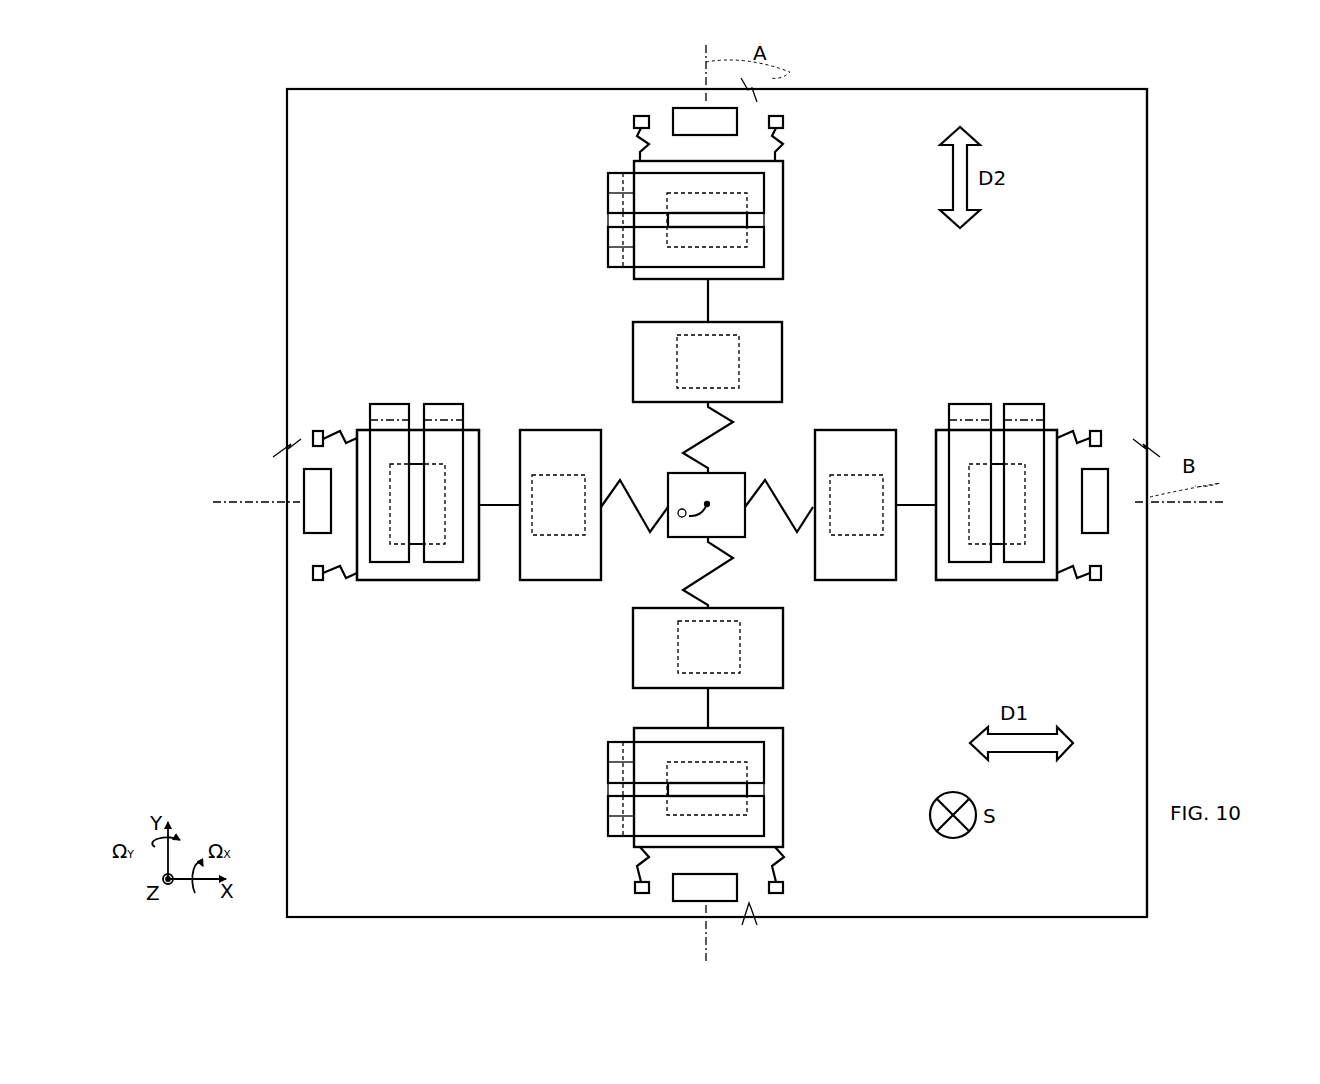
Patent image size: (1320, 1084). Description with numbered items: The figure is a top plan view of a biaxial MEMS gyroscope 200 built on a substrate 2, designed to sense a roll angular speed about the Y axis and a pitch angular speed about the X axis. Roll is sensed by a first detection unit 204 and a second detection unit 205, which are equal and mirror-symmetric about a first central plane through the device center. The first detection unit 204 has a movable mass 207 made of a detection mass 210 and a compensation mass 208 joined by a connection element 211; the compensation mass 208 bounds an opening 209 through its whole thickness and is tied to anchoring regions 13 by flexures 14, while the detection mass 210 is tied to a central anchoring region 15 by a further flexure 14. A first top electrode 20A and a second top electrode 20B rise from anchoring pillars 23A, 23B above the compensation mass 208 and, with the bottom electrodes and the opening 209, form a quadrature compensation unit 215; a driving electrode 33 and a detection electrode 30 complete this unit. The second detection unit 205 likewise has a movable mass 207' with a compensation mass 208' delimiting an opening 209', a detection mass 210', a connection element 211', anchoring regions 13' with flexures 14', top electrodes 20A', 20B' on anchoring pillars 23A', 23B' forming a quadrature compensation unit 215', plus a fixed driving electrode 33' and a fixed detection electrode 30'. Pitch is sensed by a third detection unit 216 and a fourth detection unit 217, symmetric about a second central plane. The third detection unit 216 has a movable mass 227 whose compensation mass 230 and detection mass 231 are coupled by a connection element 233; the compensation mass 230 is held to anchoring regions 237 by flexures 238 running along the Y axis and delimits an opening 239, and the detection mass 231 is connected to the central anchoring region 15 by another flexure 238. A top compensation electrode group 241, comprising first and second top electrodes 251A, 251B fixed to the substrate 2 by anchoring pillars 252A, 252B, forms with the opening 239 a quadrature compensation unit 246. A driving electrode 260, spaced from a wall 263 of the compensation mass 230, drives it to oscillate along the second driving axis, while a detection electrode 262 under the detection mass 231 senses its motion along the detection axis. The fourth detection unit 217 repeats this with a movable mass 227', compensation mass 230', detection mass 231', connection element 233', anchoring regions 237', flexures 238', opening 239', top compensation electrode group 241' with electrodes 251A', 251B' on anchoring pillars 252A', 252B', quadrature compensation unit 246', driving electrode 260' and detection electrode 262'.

The substrate 2 is at (1122, 128).
The MEMS gyroscope 200 is at (252, 112).
The anchoring regions 13 is at (960, 501).
The fixed portion 13' is at (279, 427).
The flexures 14 is at (934, 482).
The spring 14' is at (490, 485).
The central anchoring region 15 is at (727, 478).
The first top electrode 20A is at (949, 474).
The second top electrode 20B is at (1045, 479).
The first top electrode 20A' is at (463, 517).
The second top electrode 20B' is at (376, 517).
The anchoring pillar 23A is at (963, 393).
The anchoring pillar 23B is at (1040, 393).
The anchoring pillar 23A' is at (458, 394).
The anchoring pillar 23B' is at (373, 391).
The detection electrode 30 is at (856, 485).
The fixed detection electrode 30' is at (558, 530).
The driving electrode 33 is at (1131, 525).
The fixed driving electrode 33' is at (288, 527).
The first detection unit 204 is at (978, 357).
The second detection unit 205 is at (478, 345).
The movable mass 207 is at (957, 466).
The movable mass 207' is at (453, 459).
The compensation mass 208 is at (996, 531).
The compensation mass 208' is at (447, 486).
The opening 209 is at (1024, 560).
The opening 209' is at (429, 549).
The detection mass 210 is at (855, 534).
The detection mass 210' is at (563, 478).
The connection element 211 is at (916, 542).
The connection element 211' is at (503, 543).
The quadrature compensation unit 215 is at (1002, 444).
The quadrature compensation unit 215' is at (417, 446).
The third detection unit 216 is at (597, 207).
The fourth detection unit 217 is at (510, 748).
The movable mass 227 is at (667, 351).
The movable mass 227' is at (656, 648).
The compensation mass 230 is at (752, 210).
The compensation mass 230' is at (675, 774).
The detection mass 231 is at (739, 356).
The detection mass 231' is at (679, 648).
The connection element 233 is at (749, 300).
The connection element 233' is at (751, 708).
The anchoring regions 237 is at (681, 113).
The anchoring regions 237' is at (748, 888).
The flexures 238 is at (738, 291).
The flexures 238' is at (744, 709).
The opening 239 is at (756, 214).
The opening 239' is at (758, 782).
The top compensation electrode group 241 is at (574, 193).
The top compensation electrode group 241' is at (568, 822).
The quadrature compensation unit 246 is at (567, 245).
The quadrature compensation unit 246' is at (556, 783).
The first top electrode 251A is at (743, 193).
The second top electrode 251B is at (745, 247).
The first top electrode 251A' is at (738, 816).
The second top electrode 251B' is at (730, 758).
The anchoring pillar 252A is at (576, 186).
The anchoring pillar 252B is at (581, 252).
The anchoring pillar 252A' is at (573, 831).
The anchoring pillar 252B' is at (575, 769).
The driving electrode 260 is at (685, 98).
The driving electrode 260' is at (675, 897).
The detection electrode 262 is at (757, 361).
The detection electrode 262' is at (761, 647).
The wall 263 is at (748, 155).